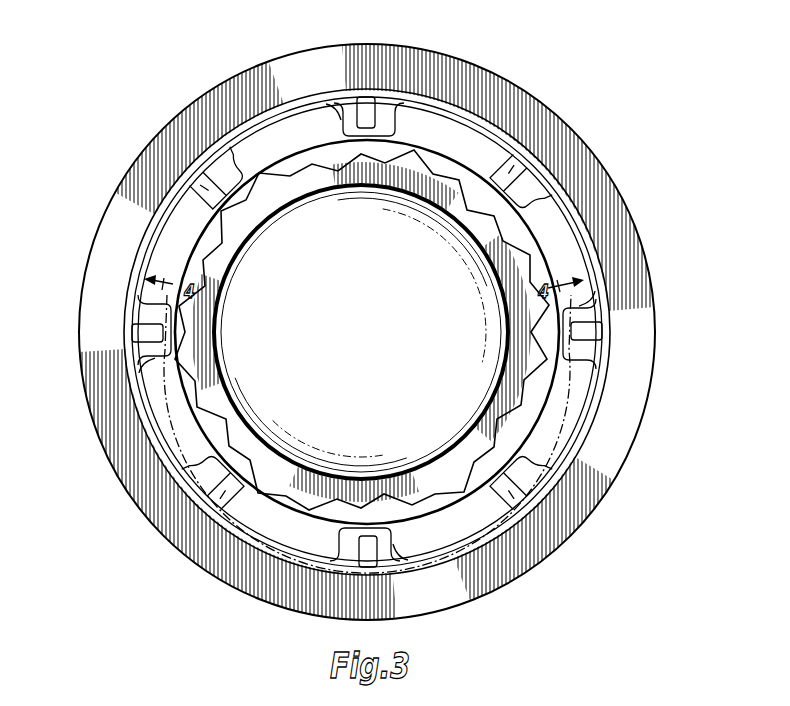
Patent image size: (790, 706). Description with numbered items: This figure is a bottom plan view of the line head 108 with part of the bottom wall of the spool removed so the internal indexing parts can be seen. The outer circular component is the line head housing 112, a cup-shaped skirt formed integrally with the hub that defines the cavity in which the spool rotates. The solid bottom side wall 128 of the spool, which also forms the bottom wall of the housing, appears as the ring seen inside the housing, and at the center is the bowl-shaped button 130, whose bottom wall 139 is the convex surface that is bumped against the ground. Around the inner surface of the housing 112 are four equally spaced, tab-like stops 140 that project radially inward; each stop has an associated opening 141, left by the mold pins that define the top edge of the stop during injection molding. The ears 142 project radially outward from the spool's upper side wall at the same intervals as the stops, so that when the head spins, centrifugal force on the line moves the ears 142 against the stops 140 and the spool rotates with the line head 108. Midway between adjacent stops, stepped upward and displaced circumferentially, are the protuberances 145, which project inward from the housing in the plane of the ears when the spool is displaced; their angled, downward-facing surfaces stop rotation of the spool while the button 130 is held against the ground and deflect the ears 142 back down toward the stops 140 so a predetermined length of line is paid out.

The line head 108 is at (574, 557).
The line head housing 112 is at (653, 388).
The bottom side wall 128 is at (197, 447).
The button 130 is at (290, 200).
The bottom wall 139 is at (437, 283).
The stops 140 is at (368, 125).
The openings 141 is at (387, 120).
The ears 142 is at (295, 128).
The protuberances 145 is at (195, 165).